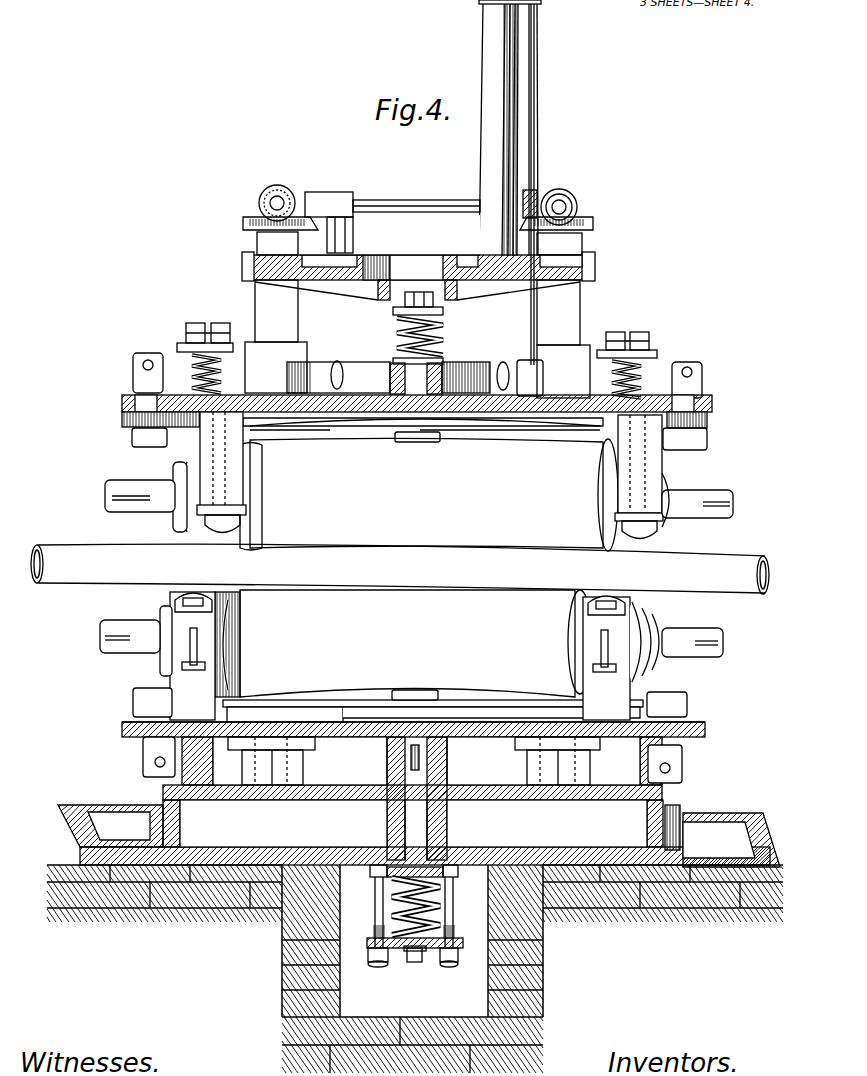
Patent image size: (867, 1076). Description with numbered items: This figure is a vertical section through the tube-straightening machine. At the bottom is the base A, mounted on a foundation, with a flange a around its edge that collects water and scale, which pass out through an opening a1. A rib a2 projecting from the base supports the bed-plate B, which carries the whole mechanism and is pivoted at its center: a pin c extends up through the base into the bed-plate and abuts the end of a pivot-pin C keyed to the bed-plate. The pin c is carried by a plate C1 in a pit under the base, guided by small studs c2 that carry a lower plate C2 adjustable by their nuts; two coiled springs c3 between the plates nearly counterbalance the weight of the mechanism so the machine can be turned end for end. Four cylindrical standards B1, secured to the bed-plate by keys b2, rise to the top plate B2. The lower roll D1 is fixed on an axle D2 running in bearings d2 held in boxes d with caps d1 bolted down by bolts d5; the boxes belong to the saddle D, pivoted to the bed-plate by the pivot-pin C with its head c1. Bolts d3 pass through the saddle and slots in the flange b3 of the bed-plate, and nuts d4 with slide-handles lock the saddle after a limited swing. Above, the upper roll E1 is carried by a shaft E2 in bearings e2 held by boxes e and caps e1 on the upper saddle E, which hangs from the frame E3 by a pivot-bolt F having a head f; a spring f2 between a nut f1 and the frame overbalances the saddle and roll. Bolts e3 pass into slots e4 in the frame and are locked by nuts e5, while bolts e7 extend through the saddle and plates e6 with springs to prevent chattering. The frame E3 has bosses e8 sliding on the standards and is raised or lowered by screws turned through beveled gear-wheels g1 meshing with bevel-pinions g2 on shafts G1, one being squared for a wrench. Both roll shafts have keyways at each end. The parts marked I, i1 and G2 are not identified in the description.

The standard/column I is at (510, 128).
The rod i1 is at (533, 128).
The top plate B2 is at (405, 257).
The cylindrical standards B1 is at (417, 312).
The rolls G2 is at (270, 203).
The bevel-pinions g2 is at (282, 189).
The beveled gear-wheels g1 is at (243, 225).
The shafts G1 is at (416, 196).
The nut f1 is at (436, 305).
The spring f2 is at (396, 345).
The pivot-bolt F is at (416, 379).
The frame E3 is at (415, 378).
The bosses e8 is at (417, 370).
The bolts e7 is at (414, 360).
The plate e6 is at (176, 345).
The slots e4 is at (122, 402).
The nuts e5 is at (132, 437).
The upper saddle E is at (423, 429).
The head f is at (440, 440).
The upper roll E1 is at (429, 494).
The boxes e is at (152, 525).
The shaft E2 is at (419, 499).
The caps e1 is at (212, 538).
The bearings e2 is at (670, 522).
The bolts e3 is at (707, 442).
The lower roll D1 is at (403, 643).
The boxes d is at (400, 656).
The caps d1 is at (178, 600).
The bolts d5 is at (399, 650).
The bearings d2 is at (226, 630).
The axle D2 is at (411, 638).
The bolts d3 is at (140, 694).
The saddle D is at (433, 707).
The head c1 is at (438, 695).
The bed-plate B is at (413, 761).
The flange b3 is at (705, 730).
The pivot-pin C is at (447, 752).
The keys b2 is at (285, 770).
The nut d4 is at (682, 768).
The base A is at (425, 832).
The rib a2 is at (415, 831).
The flange a is at (412, 836).
The opening a1 is at (719, 835).
The pin c is at (427, 828).
The plate C1 is at (452, 880).
The studs c2 is at (374, 915).
The plate C2 is at (458, 960).
The coiled springs c3 is at (410, 958).